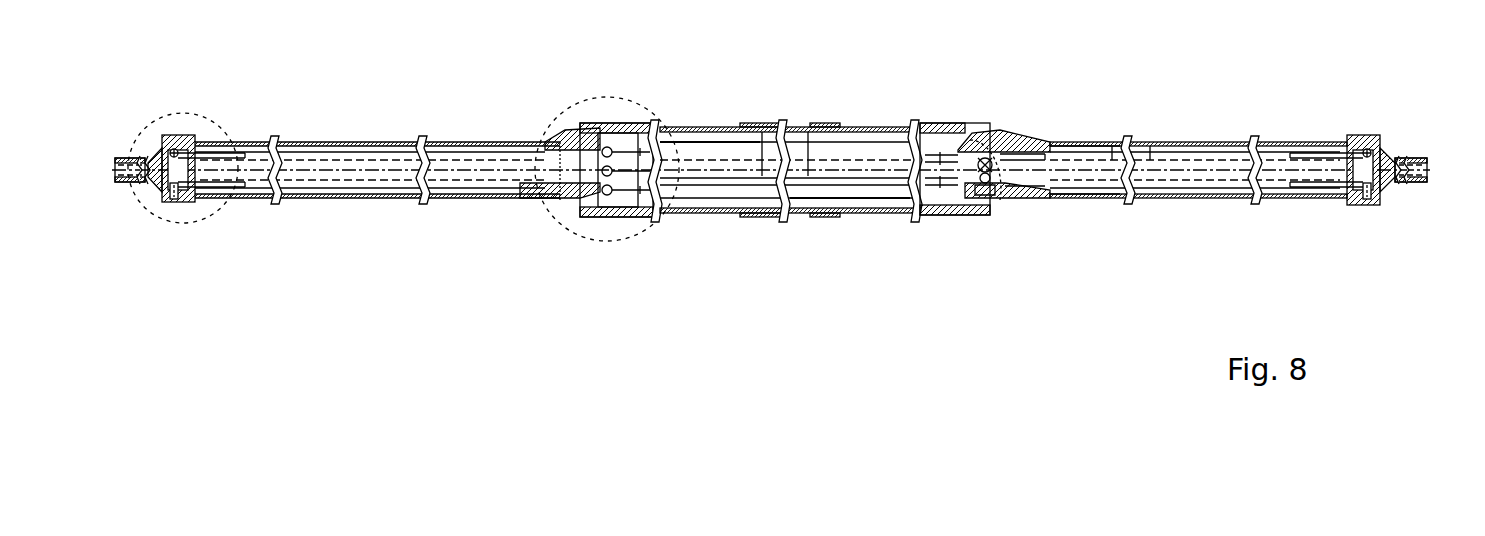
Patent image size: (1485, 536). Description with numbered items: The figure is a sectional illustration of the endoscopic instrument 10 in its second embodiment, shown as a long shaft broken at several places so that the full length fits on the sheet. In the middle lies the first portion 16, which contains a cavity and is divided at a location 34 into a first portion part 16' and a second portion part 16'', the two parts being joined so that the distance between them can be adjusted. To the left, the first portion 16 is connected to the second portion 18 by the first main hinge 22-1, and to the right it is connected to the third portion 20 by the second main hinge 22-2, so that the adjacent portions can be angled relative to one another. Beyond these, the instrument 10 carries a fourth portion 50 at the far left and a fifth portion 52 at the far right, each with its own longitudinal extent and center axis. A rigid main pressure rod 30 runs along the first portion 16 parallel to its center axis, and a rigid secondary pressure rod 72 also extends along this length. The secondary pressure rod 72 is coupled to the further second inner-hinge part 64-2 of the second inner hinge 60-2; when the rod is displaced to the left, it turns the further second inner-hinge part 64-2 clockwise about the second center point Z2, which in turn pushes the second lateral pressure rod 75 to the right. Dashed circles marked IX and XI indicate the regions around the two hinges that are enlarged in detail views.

The endoscopic instrument 10 is at (1112, 280).
The fourth portion 50 is at (126, 148).
The second portion 18 is at (441, 138).
The first main hinge 22-1 is at (599, 115).
The first portion 16 is at (791, 120).
The first portion part 16' is at (721, 137).
The second portion part 16'' is at (849, 136).
The location 34 is at (811, 127).
The secondary pressure rod 72 is at (742, 186).
The main pressure rod 30 is at (862, 190).
The second main hinge 22-2 is at (983, 106).
The further second inner-hinge part 64-2 is at (991, 171).
The second inner hinge 60-2 is at (997, 198).
The second center point Z2 is at (978, 178).
The second lateral pressure rod 75 is at (1095, 150).
The third portion 20 is at (1206, 130).
The fifth portion 52 is at (1401, 144).
The detail view IX is at (626, 238).
The detail view XI is at (200, 224).